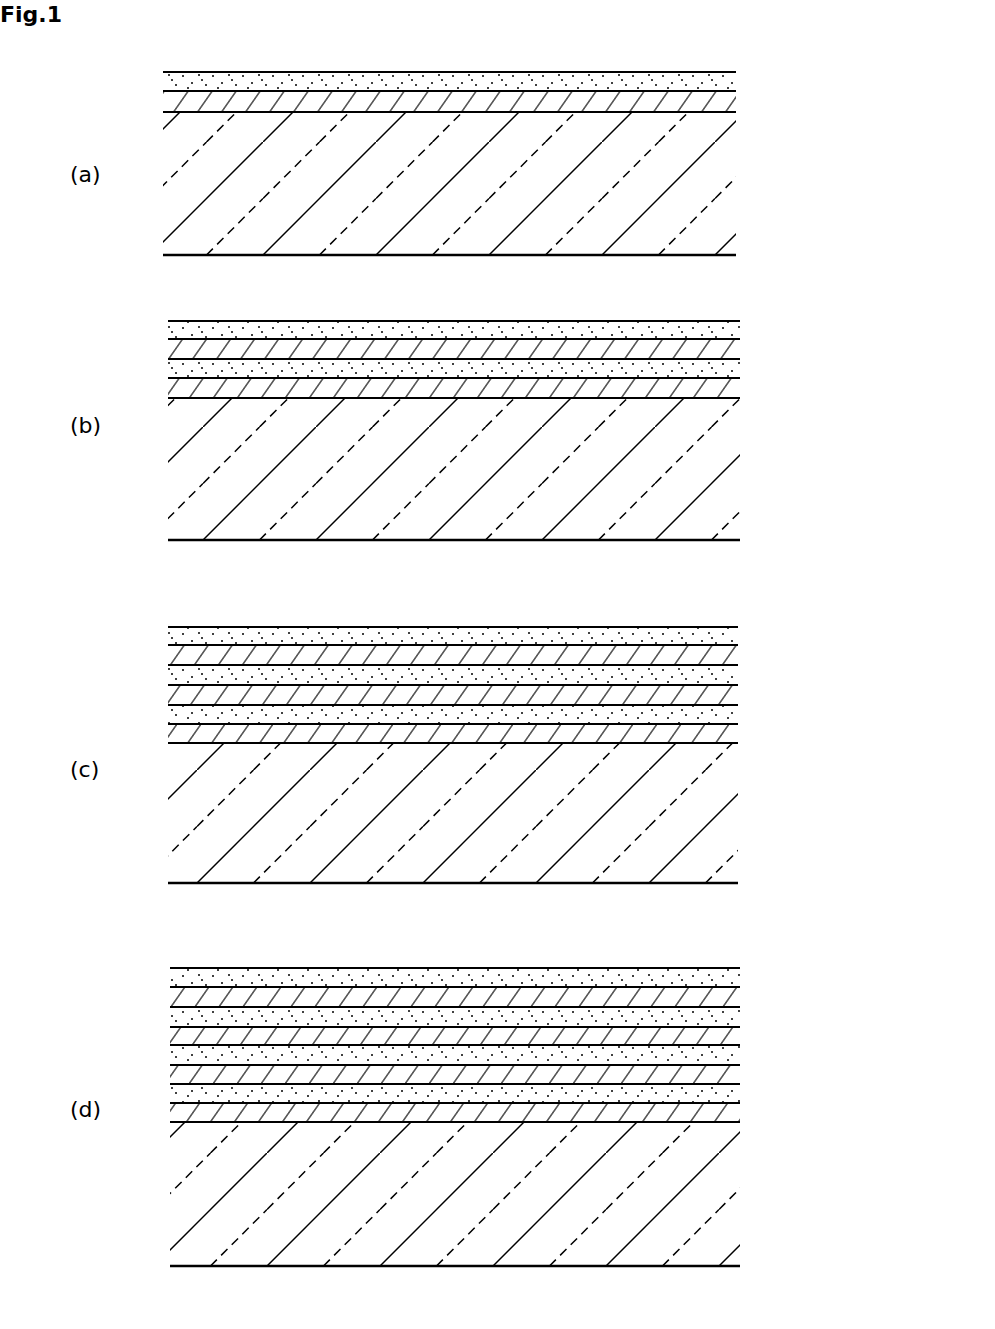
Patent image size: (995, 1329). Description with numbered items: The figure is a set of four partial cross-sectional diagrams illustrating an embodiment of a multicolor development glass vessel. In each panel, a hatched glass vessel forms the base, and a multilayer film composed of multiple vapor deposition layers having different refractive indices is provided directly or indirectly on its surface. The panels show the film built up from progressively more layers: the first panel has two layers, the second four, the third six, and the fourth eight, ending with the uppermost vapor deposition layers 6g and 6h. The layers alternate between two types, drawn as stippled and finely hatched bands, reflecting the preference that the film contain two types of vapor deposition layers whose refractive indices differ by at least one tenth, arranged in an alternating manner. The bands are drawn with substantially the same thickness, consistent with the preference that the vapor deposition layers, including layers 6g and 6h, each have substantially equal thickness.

The vapor deposition layer 6g is at (736, 1000).
The vapor deposition layer 6h is at (736, 980).